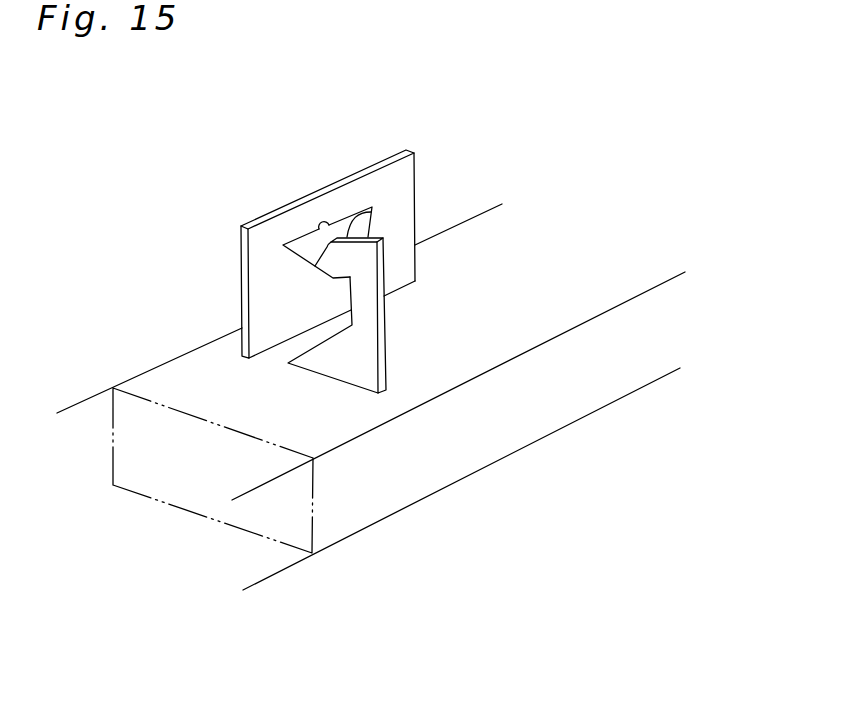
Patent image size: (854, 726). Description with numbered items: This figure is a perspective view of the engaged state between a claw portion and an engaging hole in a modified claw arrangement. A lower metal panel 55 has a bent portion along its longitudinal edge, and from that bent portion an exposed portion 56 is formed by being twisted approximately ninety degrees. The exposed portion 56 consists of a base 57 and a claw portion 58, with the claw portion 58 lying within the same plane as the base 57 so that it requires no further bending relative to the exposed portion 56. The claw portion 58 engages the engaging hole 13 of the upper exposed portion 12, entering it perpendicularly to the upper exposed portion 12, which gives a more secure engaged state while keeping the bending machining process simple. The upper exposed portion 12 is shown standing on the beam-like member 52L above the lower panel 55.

The upper exposed portion 12 is at (289, 245).
The engaging hole 13 is at (324, 224).
The left beam 52L is at (162, 367).
The metal panel 55 is at (540, 541).
The exposed portion 56 is at (462, 294).
The base 57 is at (386, 327).
The claw portion 58 is at (372, 214).